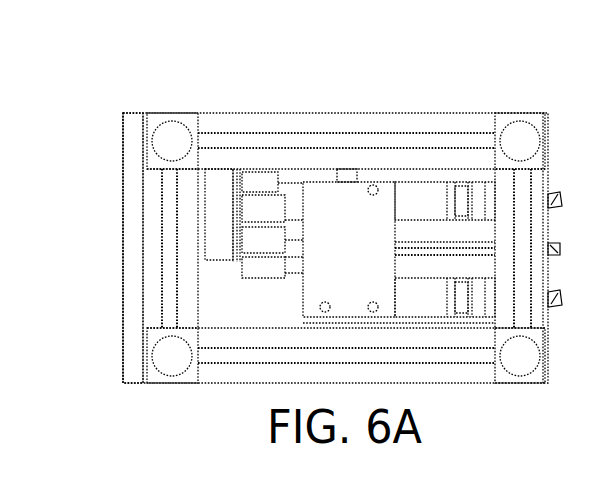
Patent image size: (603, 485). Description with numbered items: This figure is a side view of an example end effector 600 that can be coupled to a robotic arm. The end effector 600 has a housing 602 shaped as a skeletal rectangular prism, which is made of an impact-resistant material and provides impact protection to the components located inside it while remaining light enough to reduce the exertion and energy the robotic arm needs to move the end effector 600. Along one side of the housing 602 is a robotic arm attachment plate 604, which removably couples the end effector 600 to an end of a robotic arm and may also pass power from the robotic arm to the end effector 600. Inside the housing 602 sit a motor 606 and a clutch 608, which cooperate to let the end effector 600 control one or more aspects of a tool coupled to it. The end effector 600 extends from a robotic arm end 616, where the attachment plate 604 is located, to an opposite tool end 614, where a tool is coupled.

The end effector 600 is at (271, 88).
The housing 602 is at (292, 113).
The robotic arm attachment plate 604 is at (123, 295).
The motor 606 is at (205, 252).
The clutch 608 is at (392, 182).
The tool end 614 is at (556, 146).
The robotic arm end 616 is at (119, 146).